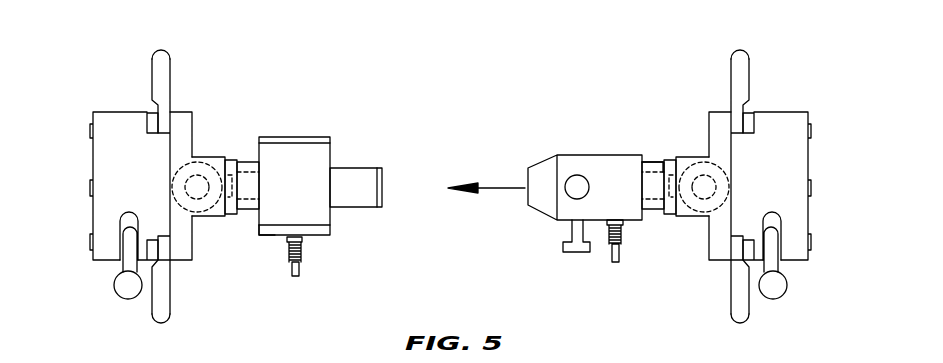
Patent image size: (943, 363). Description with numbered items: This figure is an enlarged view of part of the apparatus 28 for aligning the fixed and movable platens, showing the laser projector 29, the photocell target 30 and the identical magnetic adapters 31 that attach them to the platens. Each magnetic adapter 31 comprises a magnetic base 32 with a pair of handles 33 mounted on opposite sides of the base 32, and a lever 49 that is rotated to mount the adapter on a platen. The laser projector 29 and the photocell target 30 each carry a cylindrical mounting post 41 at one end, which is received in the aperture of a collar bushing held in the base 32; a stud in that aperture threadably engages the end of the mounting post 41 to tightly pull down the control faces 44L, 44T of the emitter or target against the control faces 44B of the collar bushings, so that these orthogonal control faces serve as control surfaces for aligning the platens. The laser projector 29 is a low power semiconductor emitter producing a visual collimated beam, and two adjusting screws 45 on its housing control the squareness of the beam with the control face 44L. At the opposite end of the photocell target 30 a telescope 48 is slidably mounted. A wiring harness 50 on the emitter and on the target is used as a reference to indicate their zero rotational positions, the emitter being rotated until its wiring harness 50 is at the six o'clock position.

The apparatus 28 is at (523, 85).
The laser projector 29 is at (583, 155).
The photocell target 30 is at (322, 137).
The magnetic adapter 31 is at (168, 51).
The magnetic base 32 is at (120, 112).
The handles 33 is at (158, 51).
The cylindrical mounting post 41 is at (250, 168).
The control faces of the collar bushings 44B is at (175, 177).
The control face of the emitter 44L is at (641, 162).
The control face of the target 44T is at (259, 228).
The adjusting screws 45 is at (577, 174).
The telescope 48 is at (360, 168).
The lever 49 is at (122, 298).
The wiring harness 50 is at (298, 270).